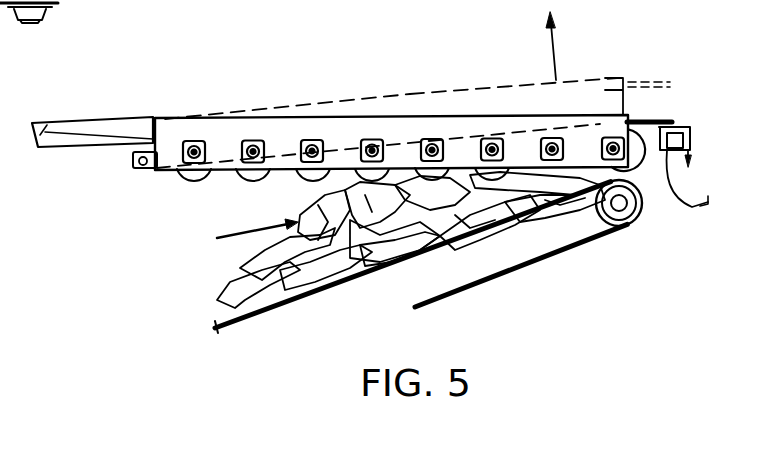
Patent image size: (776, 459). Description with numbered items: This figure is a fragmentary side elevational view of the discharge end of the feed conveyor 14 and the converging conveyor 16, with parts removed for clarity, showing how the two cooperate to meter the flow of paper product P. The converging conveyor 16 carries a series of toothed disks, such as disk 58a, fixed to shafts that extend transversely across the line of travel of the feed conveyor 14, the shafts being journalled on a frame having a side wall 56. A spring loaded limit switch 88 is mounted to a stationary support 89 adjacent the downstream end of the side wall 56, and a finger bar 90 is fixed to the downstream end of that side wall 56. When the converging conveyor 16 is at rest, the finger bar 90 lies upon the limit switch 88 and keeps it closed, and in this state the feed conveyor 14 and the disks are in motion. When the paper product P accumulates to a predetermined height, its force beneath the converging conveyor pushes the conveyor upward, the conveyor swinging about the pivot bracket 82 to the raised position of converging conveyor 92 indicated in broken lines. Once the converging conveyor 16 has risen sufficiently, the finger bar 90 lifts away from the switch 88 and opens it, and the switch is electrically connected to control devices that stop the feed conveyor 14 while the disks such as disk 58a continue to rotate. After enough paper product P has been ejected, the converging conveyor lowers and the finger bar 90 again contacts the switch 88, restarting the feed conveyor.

The feed conveyor 14 is at (352, 278).
The converging conveyor 16 is at (278, 117).
The side wall 56 is at (187, 133).
The disk 58a is at (197, 181).
The pivot bracket 82 is at (142, 169).
The spring loaded limit switch 88 is at (690, 150).
The stationary support 89 is at (677, 128).
The finger bar 90 is at (670, 122).
The raised position of converging conveyor 92 is at (414, 93).
The paper product P is at (218, 278).